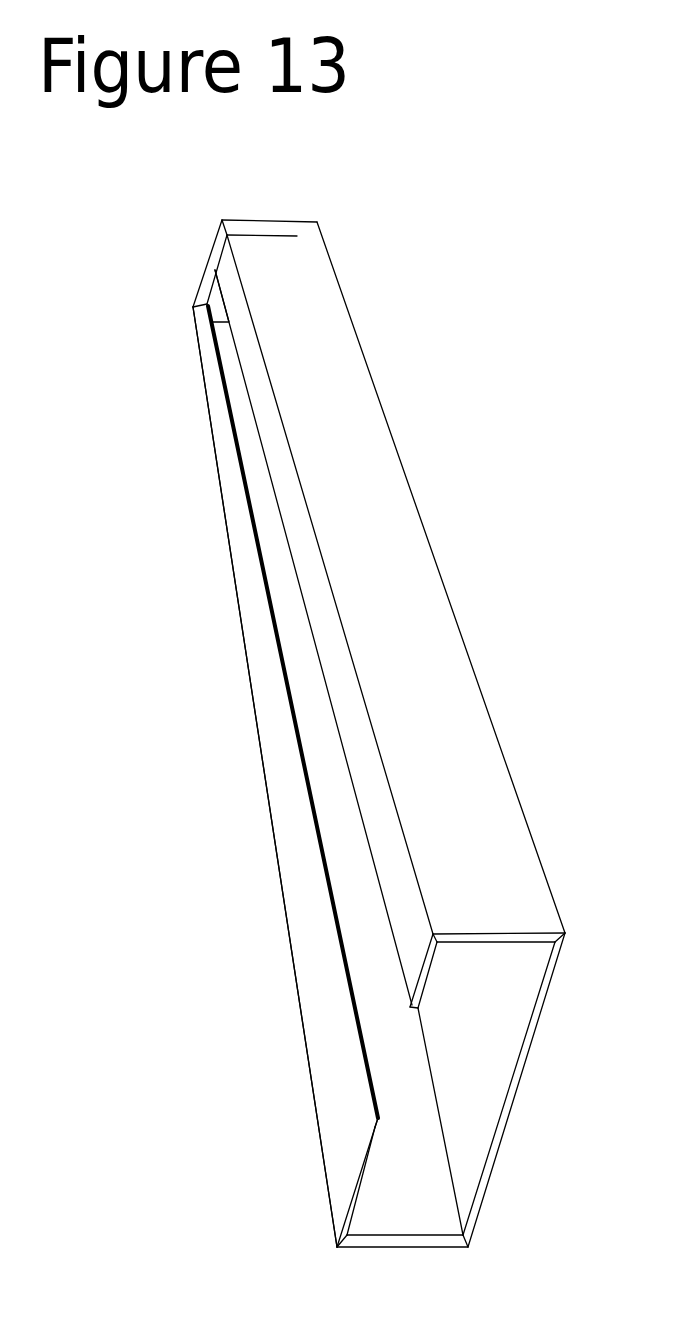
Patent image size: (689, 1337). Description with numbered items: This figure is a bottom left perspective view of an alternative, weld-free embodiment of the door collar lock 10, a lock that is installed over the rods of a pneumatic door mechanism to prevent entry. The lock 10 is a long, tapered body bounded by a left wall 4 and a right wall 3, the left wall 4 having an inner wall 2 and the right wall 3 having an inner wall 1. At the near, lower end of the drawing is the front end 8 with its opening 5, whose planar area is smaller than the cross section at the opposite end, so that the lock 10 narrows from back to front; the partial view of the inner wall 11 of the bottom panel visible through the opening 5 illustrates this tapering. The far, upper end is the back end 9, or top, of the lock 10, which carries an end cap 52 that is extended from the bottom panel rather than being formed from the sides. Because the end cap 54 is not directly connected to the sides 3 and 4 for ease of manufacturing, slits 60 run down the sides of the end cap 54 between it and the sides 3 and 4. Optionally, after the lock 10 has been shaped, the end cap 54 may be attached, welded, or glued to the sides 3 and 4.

The door collar lock 10 is at (108, 291).
The back end 9 is at (268, 207).
The end cap 54 is at (222, 221).
The slits 60 is at (283, 237).
The left wall 4 is at (456, 832).
The right wall 3 is at (263, 930).
The end cap 52 is at (380, 873).
The inner wall 1 is at (394, 1066).
The inner wall 11 is at (478, 1029).
The inner wall 2 is at (470, 966).
The opening 5 is at (482, 1112).
The front end 8 is at (530, 1100).